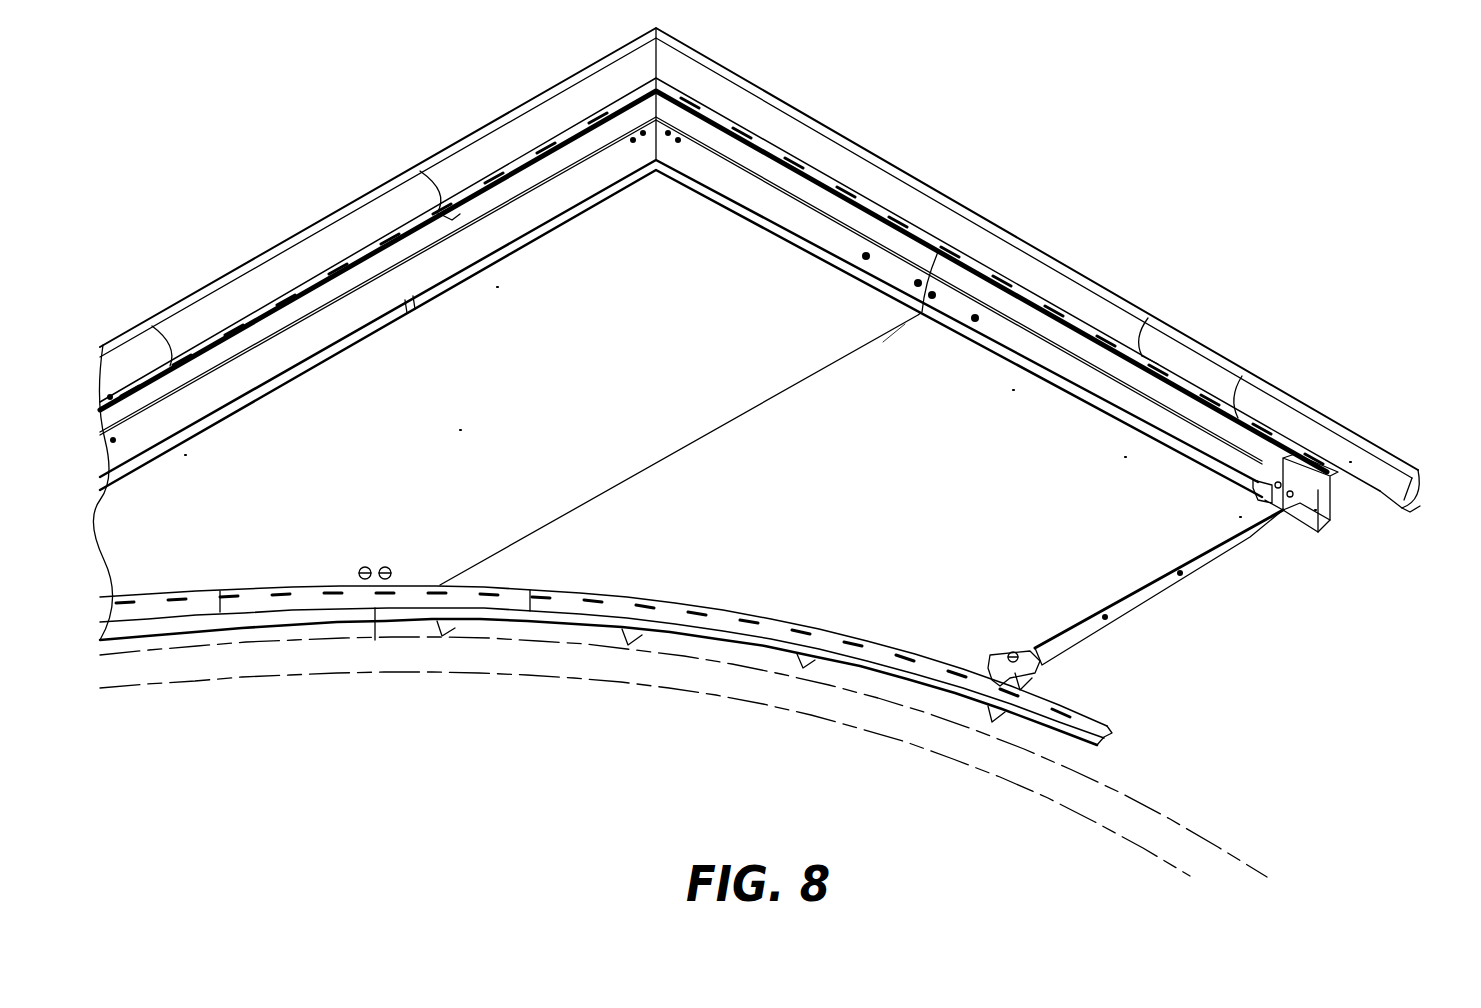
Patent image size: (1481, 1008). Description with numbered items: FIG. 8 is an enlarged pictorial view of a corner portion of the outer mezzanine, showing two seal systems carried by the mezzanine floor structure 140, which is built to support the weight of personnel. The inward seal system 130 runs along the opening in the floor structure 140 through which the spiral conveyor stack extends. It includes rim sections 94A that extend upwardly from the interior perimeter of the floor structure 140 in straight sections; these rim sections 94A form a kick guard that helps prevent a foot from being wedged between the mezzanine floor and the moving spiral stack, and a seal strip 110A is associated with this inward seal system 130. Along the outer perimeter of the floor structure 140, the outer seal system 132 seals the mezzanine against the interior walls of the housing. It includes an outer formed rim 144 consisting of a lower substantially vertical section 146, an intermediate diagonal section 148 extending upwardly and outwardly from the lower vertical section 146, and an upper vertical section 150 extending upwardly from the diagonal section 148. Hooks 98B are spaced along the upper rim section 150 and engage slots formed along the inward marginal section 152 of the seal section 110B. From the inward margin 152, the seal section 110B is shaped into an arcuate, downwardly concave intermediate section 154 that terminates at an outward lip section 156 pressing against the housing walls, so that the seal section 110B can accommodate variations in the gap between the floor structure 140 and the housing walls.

The rim section 94A is at (222, 620).
The hook 98B is at (1268, 434).
The seal strip 110A is at (1055, 738).
The seal section 110B is at (1020, 240).
The seal system 130 is at (1106, 724).
The seal system 132 is at (1198, 326).
The floor structure 140 is at (1090, 583).
The outer formed rim 144 is at (1322, 535).
The lower vertical section 146 is at (1258, 508).
The intermediate diagonal section 148 is at (1348, 507).
The upper vertical section 150 is at (1292, 460).
The inward marginal section 152 is at (1250, 418).
The intermediate section 154 is at (1418, 500).
The outward lip section 156 is at (1376, 446).